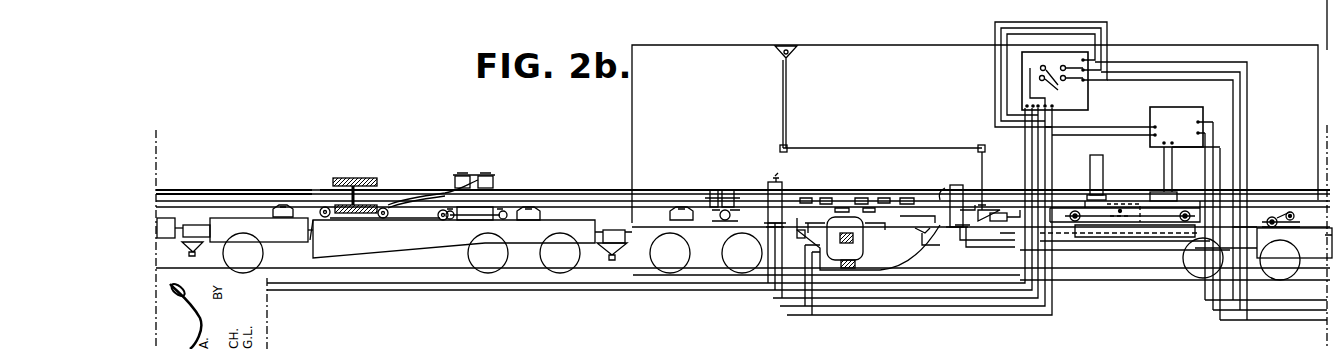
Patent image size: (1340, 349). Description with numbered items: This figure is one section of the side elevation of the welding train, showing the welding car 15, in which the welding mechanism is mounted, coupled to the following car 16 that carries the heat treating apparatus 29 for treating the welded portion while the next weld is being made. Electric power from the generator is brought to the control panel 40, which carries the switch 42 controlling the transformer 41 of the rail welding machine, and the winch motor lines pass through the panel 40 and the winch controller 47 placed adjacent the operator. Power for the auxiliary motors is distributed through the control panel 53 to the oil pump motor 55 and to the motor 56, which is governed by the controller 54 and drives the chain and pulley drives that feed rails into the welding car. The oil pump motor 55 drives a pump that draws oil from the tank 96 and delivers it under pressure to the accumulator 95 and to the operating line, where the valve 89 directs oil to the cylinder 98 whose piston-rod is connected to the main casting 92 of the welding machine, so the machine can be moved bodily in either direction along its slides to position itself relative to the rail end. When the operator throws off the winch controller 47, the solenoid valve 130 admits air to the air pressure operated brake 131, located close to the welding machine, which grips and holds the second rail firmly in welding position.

The welding car 15 is at (1158, 282).
The heat treatment car 16 is at (297, 233).
The heat treating apparatus 29 is at (351, 178).
The control panel 40 is at (1047, 52).
The transformer 41 is at (858, 250).
The switch 42 is at (1046, 67).
The winch controller 47 is at (772, 182).
The control panel 53 is at (1177, 120).
The controller 54 is at (957, 185).
The oil pump motor 55 is at (1155, 192).
The motor 56 is at (1272, 217).
The valve 89 is at (998, 212).
The main casting 92 is at (924, 245).
The accumulator 95 is at (1097, 155).
The tank 96 is at (1118, 240).
The cylinder 98 is at (976, 210).
The solenoid valve 130 is at (725, 221).
The air pressure operated brake 131 is at (722, 197).